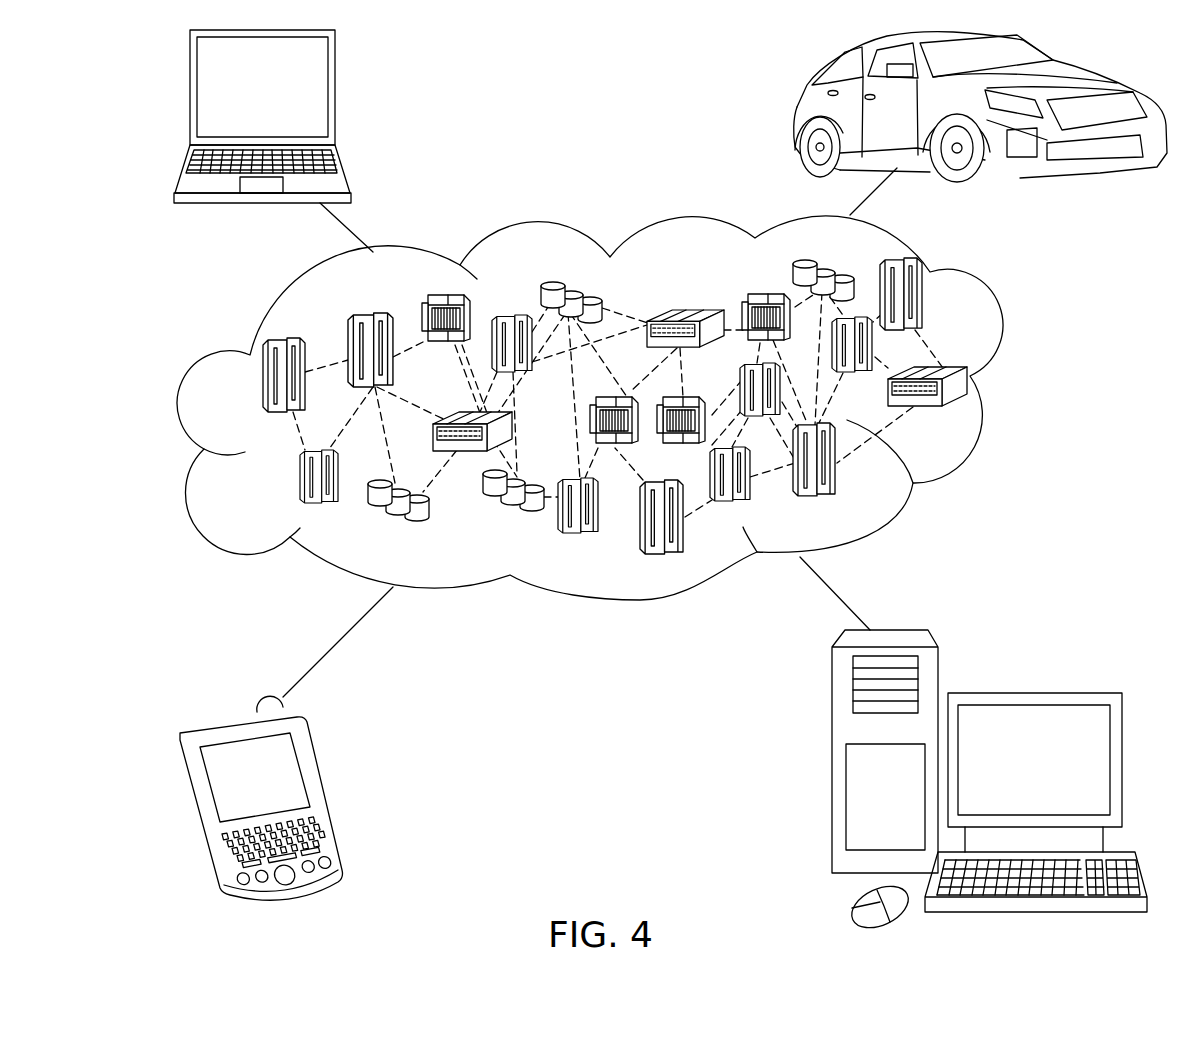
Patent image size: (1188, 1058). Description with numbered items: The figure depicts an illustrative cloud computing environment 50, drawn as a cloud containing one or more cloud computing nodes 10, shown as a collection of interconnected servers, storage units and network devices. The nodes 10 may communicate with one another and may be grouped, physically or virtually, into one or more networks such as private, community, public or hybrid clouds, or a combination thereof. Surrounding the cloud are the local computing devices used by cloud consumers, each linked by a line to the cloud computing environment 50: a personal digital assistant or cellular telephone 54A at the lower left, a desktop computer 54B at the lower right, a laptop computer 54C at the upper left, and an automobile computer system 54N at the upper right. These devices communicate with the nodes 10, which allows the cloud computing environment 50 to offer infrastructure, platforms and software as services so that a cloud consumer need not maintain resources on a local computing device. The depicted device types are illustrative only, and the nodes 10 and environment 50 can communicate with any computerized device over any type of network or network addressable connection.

The cloud computing node 10 is at (964, 414).
The cloud computing environment 50 is at (1028, 387).
The personal digital assistant or cellular telephone 54A is at (323, 792).
The desktop computer 54B is at (1030, 690).
The laptop computer 54C is at (334, 96).
The automobile computer system 54N is at (797, 110).